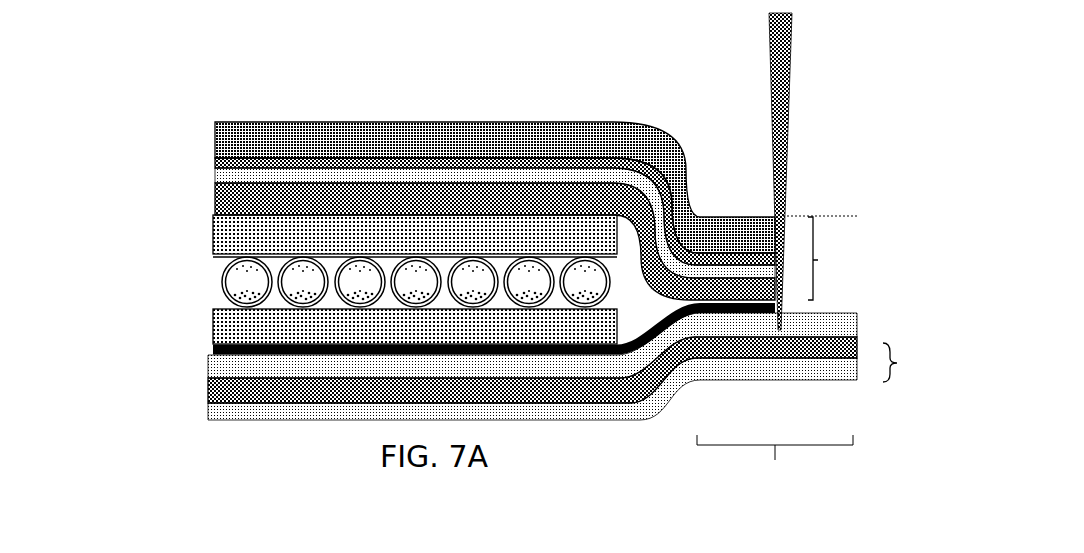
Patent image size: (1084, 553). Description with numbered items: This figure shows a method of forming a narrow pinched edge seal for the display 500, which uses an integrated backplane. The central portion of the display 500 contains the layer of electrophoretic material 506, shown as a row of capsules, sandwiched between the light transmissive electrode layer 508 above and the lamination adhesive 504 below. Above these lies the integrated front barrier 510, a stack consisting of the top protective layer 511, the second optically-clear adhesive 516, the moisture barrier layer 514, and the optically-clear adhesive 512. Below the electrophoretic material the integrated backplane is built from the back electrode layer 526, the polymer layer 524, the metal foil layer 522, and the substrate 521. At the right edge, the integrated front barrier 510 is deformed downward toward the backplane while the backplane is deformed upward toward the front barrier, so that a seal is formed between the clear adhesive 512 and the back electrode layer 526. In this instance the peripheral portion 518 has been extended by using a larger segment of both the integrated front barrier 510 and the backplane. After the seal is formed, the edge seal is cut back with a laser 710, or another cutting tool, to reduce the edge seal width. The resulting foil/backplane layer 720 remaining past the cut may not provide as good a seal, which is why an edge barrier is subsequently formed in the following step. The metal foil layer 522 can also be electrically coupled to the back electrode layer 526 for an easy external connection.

The display 500 is at (385, 80).
The top protective layer 511 is at (275, 150).
The second optically-clear adhesive 516 is at (252, 163).
The moisture barrier layer 514 is at (238, 176).
The optically-clear adhesive 512 is at (243, 195).
The light transmissive electrode layer 508 is at (228, 228).
The layer of electrophoretic material 506 is at (255, 271).
The lamination adhesive 504 is at (222, 330).
The back electrode layer 526 is at (222, 349).
The polymer layer 524 is at (225, 366).
The metal foil layer 522 is at (212, 391).
The substrate 521 is at (268, 410).
The laser 710 is at (772, 65).
The integrated front barrier 510 is at (831, 258).
The foil/backplane layer 720 is at (920, 362).
The peripheral portion 518 is at (775, 480).